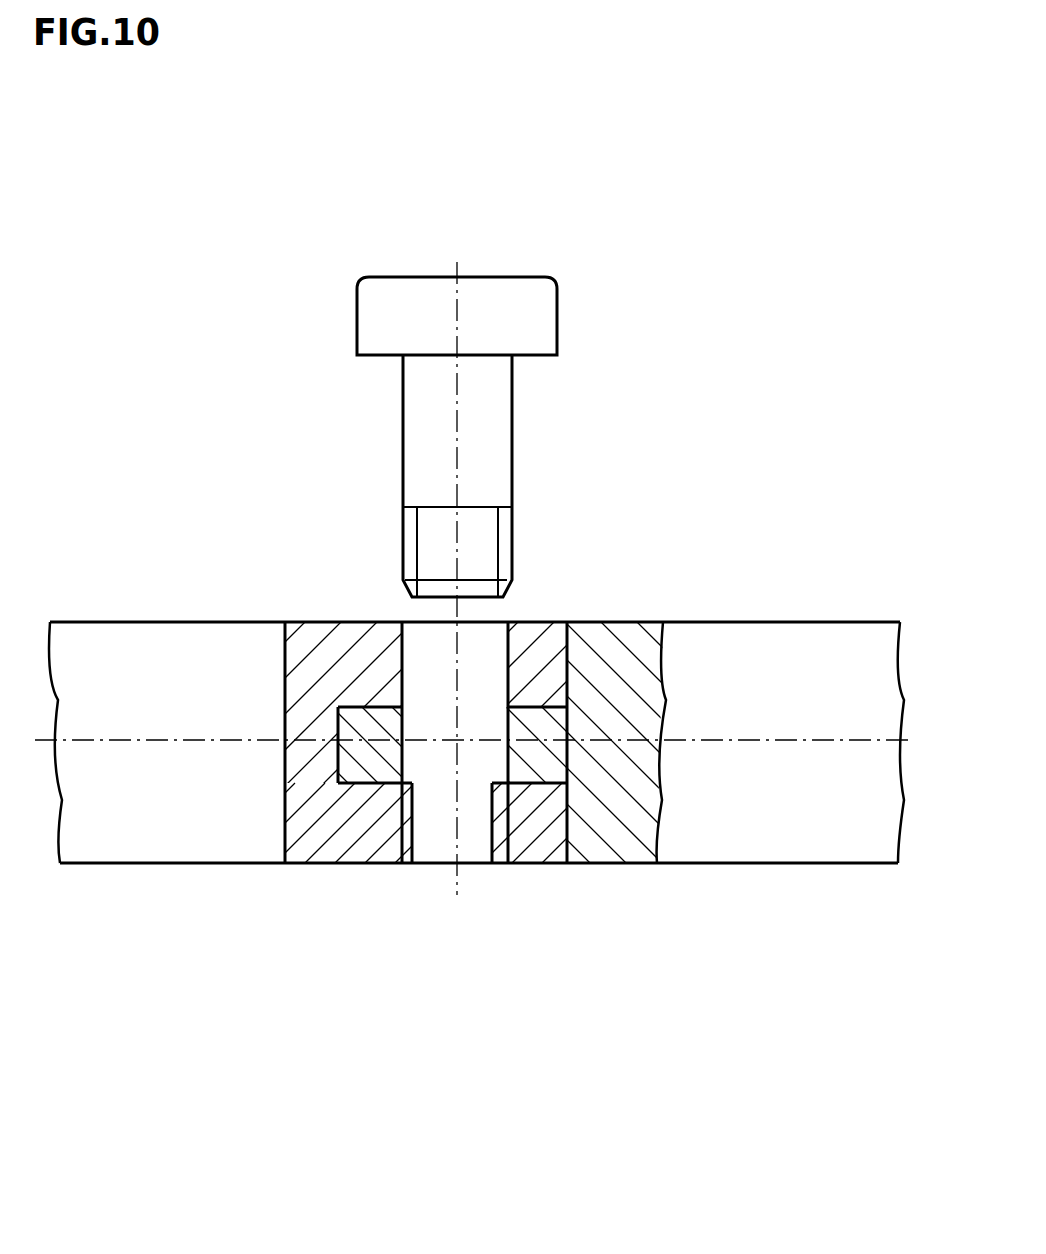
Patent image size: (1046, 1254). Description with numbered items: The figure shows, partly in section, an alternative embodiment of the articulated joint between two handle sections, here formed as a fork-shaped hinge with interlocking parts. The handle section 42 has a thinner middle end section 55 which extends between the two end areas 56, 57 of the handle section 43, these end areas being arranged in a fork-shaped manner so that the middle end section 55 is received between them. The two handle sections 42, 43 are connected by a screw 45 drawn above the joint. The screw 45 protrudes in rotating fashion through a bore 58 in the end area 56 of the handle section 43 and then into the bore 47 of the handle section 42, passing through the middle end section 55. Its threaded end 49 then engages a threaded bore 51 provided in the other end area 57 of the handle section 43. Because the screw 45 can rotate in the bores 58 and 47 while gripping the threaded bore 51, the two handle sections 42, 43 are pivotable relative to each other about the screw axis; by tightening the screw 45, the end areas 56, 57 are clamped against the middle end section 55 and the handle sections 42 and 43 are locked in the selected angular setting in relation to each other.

The handle section 42 is at (650, 620).
The handle section 43 is at (315, 621).
The screw 45 is at (559, 320).
The bore 47 is at (422, 762).
The threaded end 49 is at (513, 552).
The threaded bore 51 is at (495, 822).
The middle end section 55 is at (350, 783).
The end area 56 is at (537, 633).
The end area 57 is at (537, 833).
The bore 58 is at (432, 632).